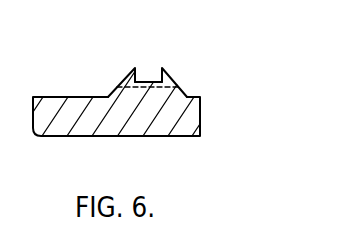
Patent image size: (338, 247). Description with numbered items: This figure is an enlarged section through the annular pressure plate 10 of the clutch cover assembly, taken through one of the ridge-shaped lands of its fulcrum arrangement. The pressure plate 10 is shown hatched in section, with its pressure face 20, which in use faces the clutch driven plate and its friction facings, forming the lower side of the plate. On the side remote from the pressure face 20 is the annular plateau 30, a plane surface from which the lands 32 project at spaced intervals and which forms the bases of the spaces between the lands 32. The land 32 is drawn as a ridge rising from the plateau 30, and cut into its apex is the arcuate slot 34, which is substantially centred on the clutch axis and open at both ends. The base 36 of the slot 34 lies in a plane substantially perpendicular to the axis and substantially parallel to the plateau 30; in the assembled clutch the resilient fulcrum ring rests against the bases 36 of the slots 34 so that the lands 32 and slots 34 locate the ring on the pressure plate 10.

The pressure plate 10 is at (188, 120).
The pressure face 20 is at (70, 137).
The annular plateau 30 is at (129, 83).
The land 32 is at (165, 68).
The arcuate slot 34 is at (137, 67).
The slot base 36 is at (153, 80).